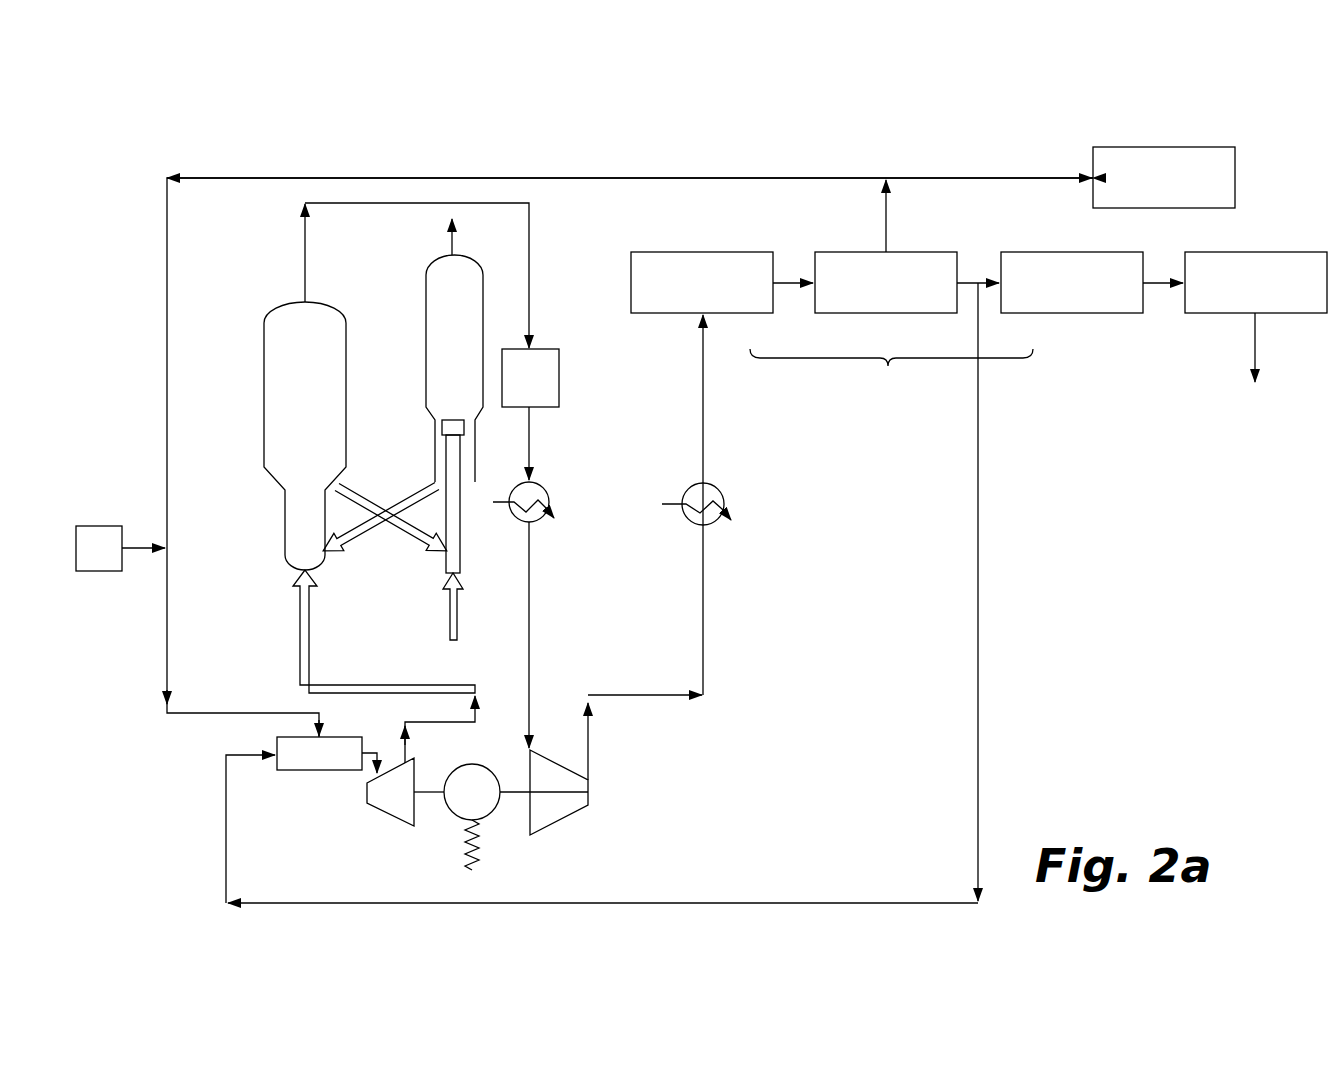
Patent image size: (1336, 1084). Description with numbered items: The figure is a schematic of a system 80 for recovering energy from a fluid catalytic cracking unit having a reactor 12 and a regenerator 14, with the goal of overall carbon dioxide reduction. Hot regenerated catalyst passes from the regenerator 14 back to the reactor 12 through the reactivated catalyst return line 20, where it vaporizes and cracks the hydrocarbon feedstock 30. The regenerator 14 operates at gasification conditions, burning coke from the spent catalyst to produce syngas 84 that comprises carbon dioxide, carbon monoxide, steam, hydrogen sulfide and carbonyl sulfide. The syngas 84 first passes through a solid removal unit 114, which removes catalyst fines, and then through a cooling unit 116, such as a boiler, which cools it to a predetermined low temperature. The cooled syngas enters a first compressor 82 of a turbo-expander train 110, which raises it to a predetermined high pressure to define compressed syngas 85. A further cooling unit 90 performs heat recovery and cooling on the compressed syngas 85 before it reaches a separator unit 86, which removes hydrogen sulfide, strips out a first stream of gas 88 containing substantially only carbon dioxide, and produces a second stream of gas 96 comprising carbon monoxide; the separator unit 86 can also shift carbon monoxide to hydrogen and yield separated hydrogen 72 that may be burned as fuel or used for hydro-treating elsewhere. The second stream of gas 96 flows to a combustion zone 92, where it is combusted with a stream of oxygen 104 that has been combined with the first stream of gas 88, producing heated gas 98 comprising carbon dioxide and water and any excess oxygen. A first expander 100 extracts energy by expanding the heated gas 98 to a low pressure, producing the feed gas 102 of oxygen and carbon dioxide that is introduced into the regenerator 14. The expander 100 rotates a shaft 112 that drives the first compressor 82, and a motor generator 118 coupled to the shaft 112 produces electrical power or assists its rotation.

The system for recovering energy 80 is at (173, 142).
The first stream of gas 88 is at (166, 326).
The syngas 84 is at (305, 262).
The reactor 12 is at (454, 414).
The regenerator 14 is at (305, 436).
The reactivated catalyst return line 20 is at (372, 495).
The solid removal unit 114 is at (559, 378).
The cooling unit 116 is at (552, 502).
The motor generator 118 is at (478, 768).
The first compressor 82 is at (562, 822).
The compressed syngas 85 is at (703, 685).
The cooling unit 90 is at (726, 504).
The separator unit 86 is at (888, 372).
The separated H2 72 is at (1255, 338).
The second stream of gas 96 is at (978, 600).
The stream of O2 104 is at (140, 546).
The feed gas 102 is at (300, 633).
The hydrocarbon feedstock 30 is at (457, 612).
The combustion zone 92 is at (319, 753).
The first expander 100 is at (388, 812).
The heated gas 98 is at (372, 752).
The shaft 112 is at (424, 788).
The turbo-expander train 110 is at (440, 858).